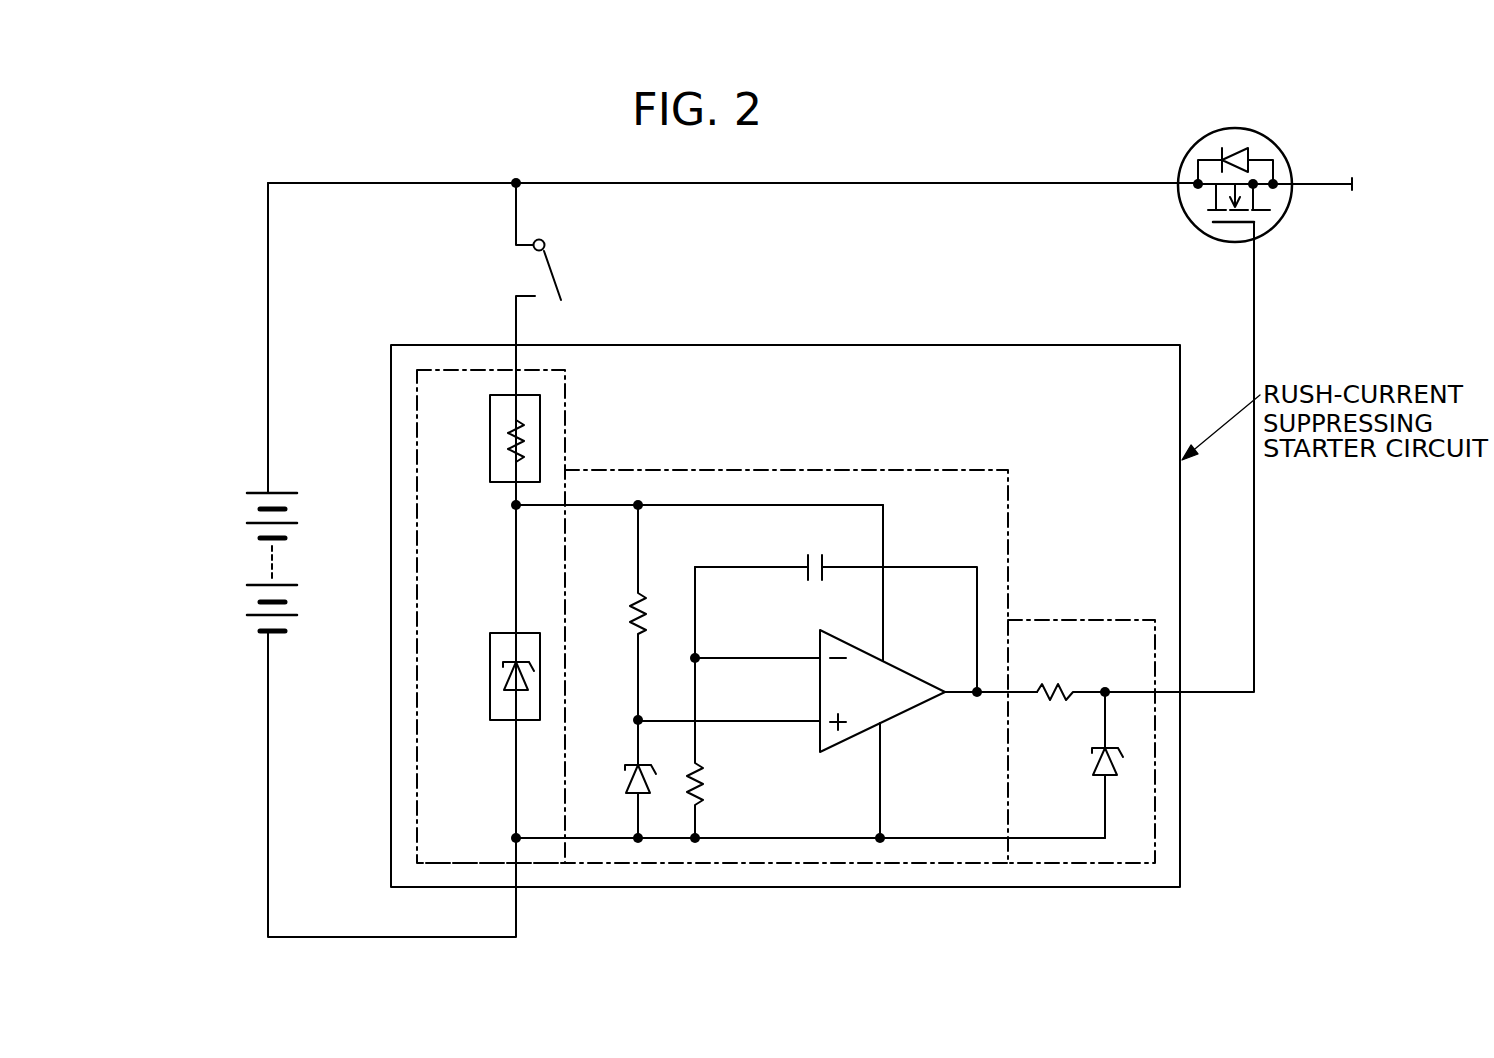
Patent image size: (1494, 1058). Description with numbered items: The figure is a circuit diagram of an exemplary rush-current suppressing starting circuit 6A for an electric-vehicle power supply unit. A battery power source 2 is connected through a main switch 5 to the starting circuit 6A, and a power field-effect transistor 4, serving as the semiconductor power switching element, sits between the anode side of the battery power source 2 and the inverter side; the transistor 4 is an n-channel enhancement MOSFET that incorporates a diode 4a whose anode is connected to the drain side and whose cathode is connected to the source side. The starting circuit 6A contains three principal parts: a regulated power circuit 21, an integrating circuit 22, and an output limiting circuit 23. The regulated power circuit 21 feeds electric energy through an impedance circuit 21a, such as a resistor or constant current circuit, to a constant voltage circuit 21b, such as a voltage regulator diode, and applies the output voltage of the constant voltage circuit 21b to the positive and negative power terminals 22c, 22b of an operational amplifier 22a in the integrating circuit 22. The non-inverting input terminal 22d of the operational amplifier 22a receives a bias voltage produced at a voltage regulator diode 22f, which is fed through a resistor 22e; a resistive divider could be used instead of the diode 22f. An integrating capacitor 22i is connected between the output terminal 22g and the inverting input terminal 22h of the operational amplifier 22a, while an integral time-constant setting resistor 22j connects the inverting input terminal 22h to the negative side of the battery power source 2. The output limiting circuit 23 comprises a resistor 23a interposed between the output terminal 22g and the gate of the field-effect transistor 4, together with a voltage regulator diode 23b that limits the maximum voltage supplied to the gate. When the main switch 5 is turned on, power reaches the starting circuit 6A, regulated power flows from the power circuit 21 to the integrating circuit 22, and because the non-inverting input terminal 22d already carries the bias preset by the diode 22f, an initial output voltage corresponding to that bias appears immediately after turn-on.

The battery power source 2 is at (253, 565).
The power field-effect transistor 4 is at (1212, 154).
The diode 4a is at (1232, 150).
The main switch 5 is at (540, 277).
The rush-current suppressing starting circuit 6A is at (822, 343).
The regulated power circuit 21 is at (565, 418).
The impedance circuit 21a is at (490, 463).
The constant voltage circuit 21b is at (490, 703).
The integrating circuit 22 is at (845, 468).
The operational amplifier 22a is at (905, 712).
The negative power terminal 22b is at (886, 660).
The positive power terminal 22c is at (880, 725).
The non-inverting input terminal 22d is at (818, 718).
The resistor 22e is at (622, 605).
The voltage regulator diode 22f is at (622, 778).
The output terminal 22g is at (946, 695).
The inverting input terminal 22h is at (818, 655).
The integrating capacitor 22i is at (815, 552).
The integral time-constant setting resistor 22j is at (715, 778).
The output limiting circuit 23 is at (1088, 620).
The resistor 23a is at (1048, 675).
The voltage regulator diode 23b is at (1090, 762).